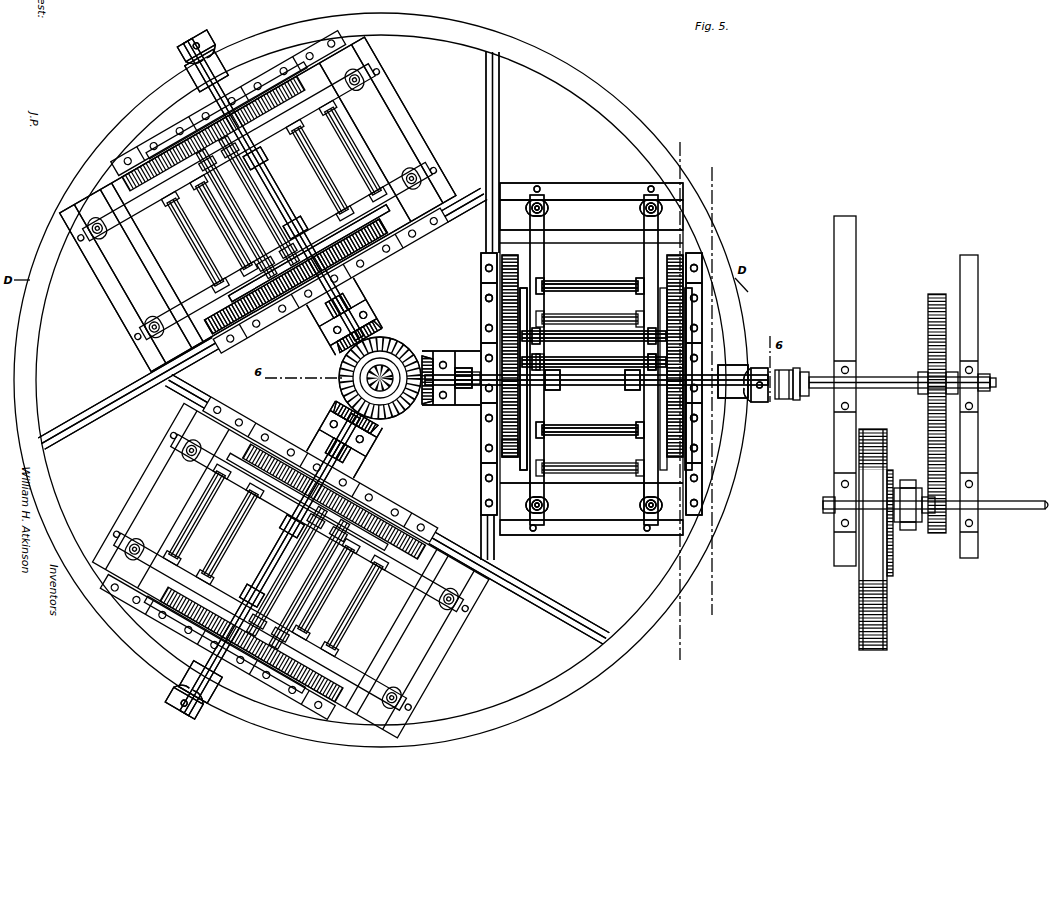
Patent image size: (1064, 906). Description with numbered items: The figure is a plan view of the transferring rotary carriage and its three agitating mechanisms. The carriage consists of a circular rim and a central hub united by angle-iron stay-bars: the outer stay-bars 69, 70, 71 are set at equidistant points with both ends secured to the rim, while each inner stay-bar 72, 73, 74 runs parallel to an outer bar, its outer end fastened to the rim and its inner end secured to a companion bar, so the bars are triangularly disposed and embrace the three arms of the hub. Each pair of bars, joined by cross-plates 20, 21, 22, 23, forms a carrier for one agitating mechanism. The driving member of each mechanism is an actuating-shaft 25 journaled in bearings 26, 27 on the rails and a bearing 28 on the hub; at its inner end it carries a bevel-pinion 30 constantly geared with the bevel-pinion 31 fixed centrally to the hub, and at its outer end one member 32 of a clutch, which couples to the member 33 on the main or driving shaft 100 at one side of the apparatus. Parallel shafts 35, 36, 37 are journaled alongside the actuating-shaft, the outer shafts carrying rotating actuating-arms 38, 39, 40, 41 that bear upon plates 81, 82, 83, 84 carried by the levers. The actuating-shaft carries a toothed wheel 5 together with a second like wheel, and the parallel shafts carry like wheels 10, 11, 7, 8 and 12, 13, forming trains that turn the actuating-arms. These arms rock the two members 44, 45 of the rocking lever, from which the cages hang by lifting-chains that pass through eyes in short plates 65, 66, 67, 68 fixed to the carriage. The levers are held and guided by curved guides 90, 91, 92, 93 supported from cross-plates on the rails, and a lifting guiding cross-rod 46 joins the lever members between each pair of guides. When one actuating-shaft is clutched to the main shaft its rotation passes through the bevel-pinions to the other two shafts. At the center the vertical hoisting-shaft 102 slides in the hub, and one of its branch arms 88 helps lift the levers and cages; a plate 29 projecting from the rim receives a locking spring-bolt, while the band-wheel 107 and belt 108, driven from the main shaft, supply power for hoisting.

The toothed wheel 5 is at (455, 377).
The toothed wheel 7 is at (452, 371).
The toothed wheel 8 is at (464, 331).
The toothed wheel 10 is at (433, 352).
The toothed wheel 11 is at (438, 358).
The toothed wheel 12 is at (412, 423).
The toothed wheel 13 is at (377, 358).
The cross-plate 20 is at (600, 527).
The cross-plate 21 is at (598, 486).
The cross-plate 22 is at (596, 232).
The cross-plate 23 is at (594, 183).
The actuating-shaft 25 is at (756, 338).
The bearing 26 is at (468, 246).
The bearing 27 is at (395, 482).
The bearing 28 is at (372, 330).
The plate 29 is at (210, 48).
The bevel-pinion 30 is at (342, 354).
The bevel-pinion 31 is at (400, 412).
The clutch member 32 is at (170, 47).
The clutch member 33 is at (790, 368).
The parallel shaft 35 is at (435, 371).
The parallel shaft 36 is at (432, 403).
The parallel shaft 37 is at (596, 284).
The rotating actuating-arm 38 is at (406, 320).
The rotating actuating-arm 39 is at (218, 438).
The rotating actuating-arm 40 is at (442, 417).
The rotating actuating-arm 41 is at (356, 414).
The rocking lever member 44 is at (650, 306).
The rocking lever member 45 is at (544, 306).
The lifting guiding cross-rod 46 is at (474, 373).
The short plate 65 is at (408, 313).
The short plate 66 is at (370, 336).
The short plate 67 is at (381, 459).
The short plate 68 is at (352, 393).
The outer stay-bar 69 is at (370, 42).
The outer stay-bar 70 is at (700, 500).
The outer stay-bar 71 is at (98, 560).
The inner stay-bar 72 is at (80, 414).
The inner stay-bar 73 is at (500, 100).
The inner stay-bar 74 is at (548, 616).
The plate 81 is at (426, 350).
The plate 82 is at (409, 330).
The plate 83 is at (512, 454).
The plate 84 is at (375, 423).
The branch arm 88 is at (261, 261).
The curved guide 90 is at (439, 371).
The curved guide 91 is at (416, 380).
The curved guide 92 is at (440, 392).
The curved guide 93 is at (404, 395).
The main or driving shaft 100 is at (905, 386).
The vertical hoisting-shaft 102 is at (384, 370).
The band-wheel 107 is at (890, 432).
The belt 108 is at (884, 618).